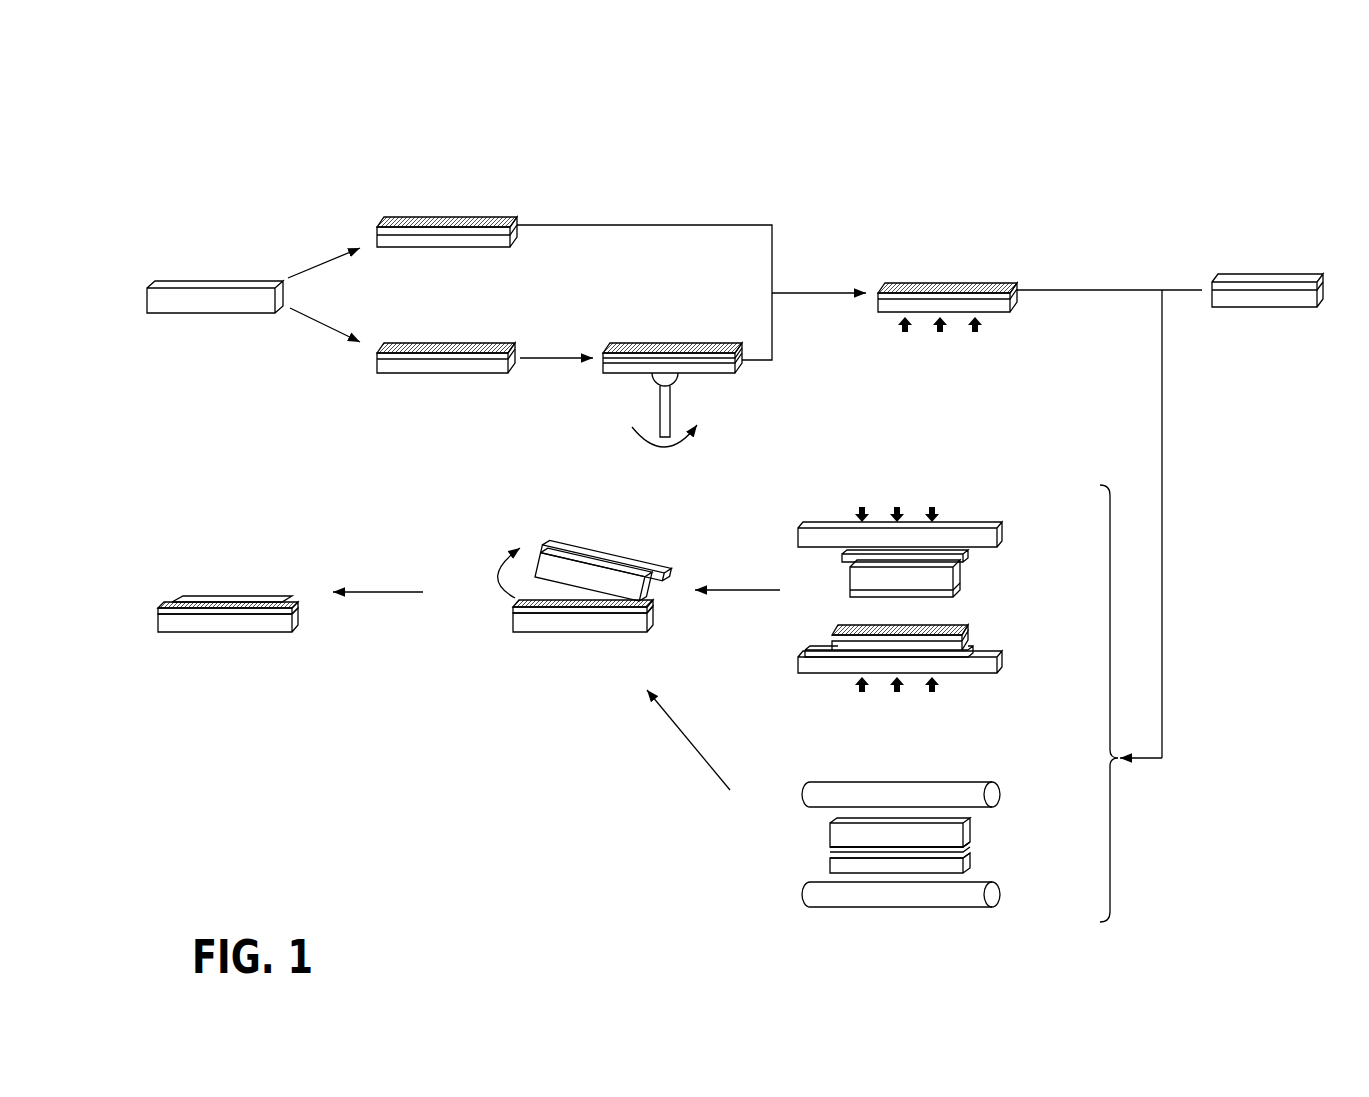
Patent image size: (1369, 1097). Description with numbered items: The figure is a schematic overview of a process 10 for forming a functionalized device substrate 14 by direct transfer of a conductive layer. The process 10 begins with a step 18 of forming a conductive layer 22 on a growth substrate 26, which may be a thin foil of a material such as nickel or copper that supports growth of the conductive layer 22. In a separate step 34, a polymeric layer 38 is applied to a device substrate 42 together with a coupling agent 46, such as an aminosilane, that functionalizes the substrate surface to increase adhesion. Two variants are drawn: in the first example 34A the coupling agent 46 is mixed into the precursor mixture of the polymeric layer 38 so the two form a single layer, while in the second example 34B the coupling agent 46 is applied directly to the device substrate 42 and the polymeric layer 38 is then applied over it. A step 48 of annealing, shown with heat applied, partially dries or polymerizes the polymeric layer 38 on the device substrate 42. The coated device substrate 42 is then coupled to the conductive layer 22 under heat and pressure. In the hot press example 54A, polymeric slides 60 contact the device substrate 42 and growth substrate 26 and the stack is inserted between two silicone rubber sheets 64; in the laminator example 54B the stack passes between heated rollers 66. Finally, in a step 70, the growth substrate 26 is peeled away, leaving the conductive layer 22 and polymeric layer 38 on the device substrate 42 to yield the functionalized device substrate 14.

The process 10 is at (945, 138).
The functionalized device substrate 14 is at (275, 647).
The step of forming a conductive layer 18 is at (1243, 252).
The conductive layer 22 is at (1300, 274).
The growth substrate 26 is at (1280, 300).
The step of applying a polymeric layer 34 is at (405, 135).
The first example of step 34 34A is at (370, 217).
The second example of step 34 34B is at (488, 390).
The polymeric layer 38 is at (510, 222).
The device substrate 42 is at (205, 300).
The coupling agent 46 is at (170, 606).
The step of annealing 48 is at (887, 245).
The hot press example of step 54 54A is at (895, 727).
The laminator example of step 54 54B is at (893, 927).
The polymeric slide 60 is at (850, 553).
The silicone rubber sheet 64 is at (975, 533).
The roller 66 is at (968, 792).
The step of peeling 70 is at (500, 645).